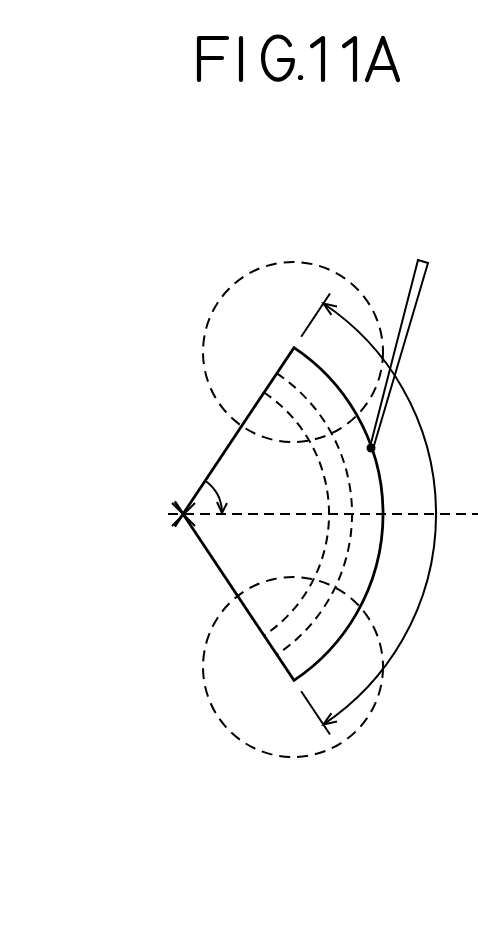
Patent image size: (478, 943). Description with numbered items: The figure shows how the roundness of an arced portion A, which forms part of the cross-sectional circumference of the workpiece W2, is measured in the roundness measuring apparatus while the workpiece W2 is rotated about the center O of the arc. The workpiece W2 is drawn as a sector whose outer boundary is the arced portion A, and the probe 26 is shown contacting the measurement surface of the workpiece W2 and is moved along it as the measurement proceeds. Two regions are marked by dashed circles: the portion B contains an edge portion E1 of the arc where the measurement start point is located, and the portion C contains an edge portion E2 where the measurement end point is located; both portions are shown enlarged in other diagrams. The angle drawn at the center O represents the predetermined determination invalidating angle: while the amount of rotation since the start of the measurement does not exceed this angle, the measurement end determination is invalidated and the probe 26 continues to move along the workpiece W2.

The probe 26 is at (412, 280).
The arced portion A is at (375, 570).
The portion B is at (277, 262).
The portion C is at (282, 757).
The edge portion E1 is at (270, 344).
The edge portion E2 is at (282, 700).
The center of the arc O is at (184, 512).
The workpiece W2 is at (221, 570).